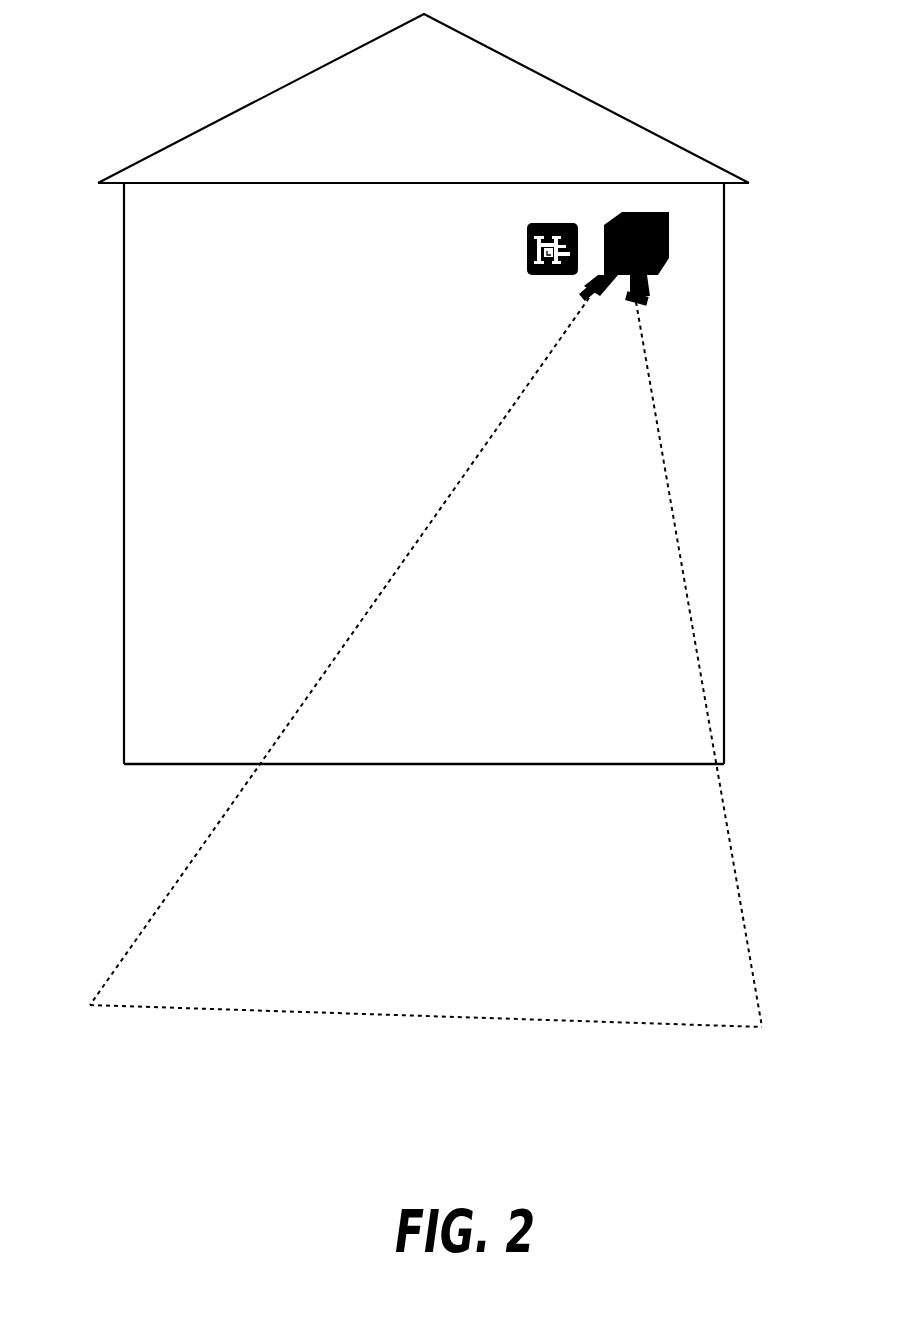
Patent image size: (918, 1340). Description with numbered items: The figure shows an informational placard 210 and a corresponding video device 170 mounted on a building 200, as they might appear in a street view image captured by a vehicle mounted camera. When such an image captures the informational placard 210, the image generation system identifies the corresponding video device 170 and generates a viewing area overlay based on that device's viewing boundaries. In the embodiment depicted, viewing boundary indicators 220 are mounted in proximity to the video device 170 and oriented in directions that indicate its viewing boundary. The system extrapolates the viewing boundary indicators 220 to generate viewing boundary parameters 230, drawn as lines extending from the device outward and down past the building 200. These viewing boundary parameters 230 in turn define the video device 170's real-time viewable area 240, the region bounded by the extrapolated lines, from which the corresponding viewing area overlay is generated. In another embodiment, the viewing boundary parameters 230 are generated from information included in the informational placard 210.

The building 200 is at (206, 95).
The informational placard 210 is at (457, 271).
The video device 170 is at (703, 262).
The viewing boundary indicators 220 is at (637, 297).
The viewing boundary parameters 230 is at (428, 1012).
The real-time viewable area 240 is at (383, 907).